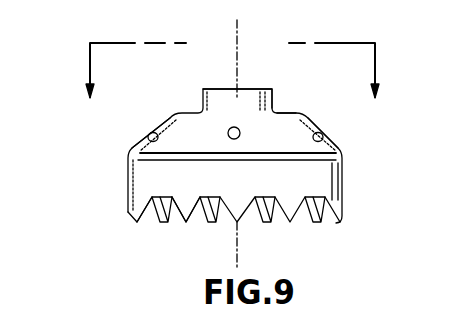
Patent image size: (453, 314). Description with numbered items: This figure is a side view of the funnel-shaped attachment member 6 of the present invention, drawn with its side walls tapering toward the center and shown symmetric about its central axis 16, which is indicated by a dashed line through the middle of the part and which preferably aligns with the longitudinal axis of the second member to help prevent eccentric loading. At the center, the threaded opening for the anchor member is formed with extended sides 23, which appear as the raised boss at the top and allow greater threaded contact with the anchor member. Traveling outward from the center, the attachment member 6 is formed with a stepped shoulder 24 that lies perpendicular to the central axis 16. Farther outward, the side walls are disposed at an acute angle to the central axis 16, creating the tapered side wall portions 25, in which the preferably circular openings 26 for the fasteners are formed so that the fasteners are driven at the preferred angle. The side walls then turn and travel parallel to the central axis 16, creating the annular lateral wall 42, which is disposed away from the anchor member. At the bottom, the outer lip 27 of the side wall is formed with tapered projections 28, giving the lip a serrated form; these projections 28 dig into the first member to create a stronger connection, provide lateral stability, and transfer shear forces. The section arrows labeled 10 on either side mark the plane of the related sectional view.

The attachment member 6 is at (345, 202).
The section line 10 is at (234, 74).
The central axis 16 is at (238, 35).
The extended sides 23 is at (275, 100).
The stepped shoulder 24 is at (291, 113).
The tapered side wall portions 25 is at (168, 128).
The openings 26 is at (152, 135).
The outer lip 27 is at (316, 225).
The projections 28 is at (133, 213).
The lateral wall 42 is at (347, 178).